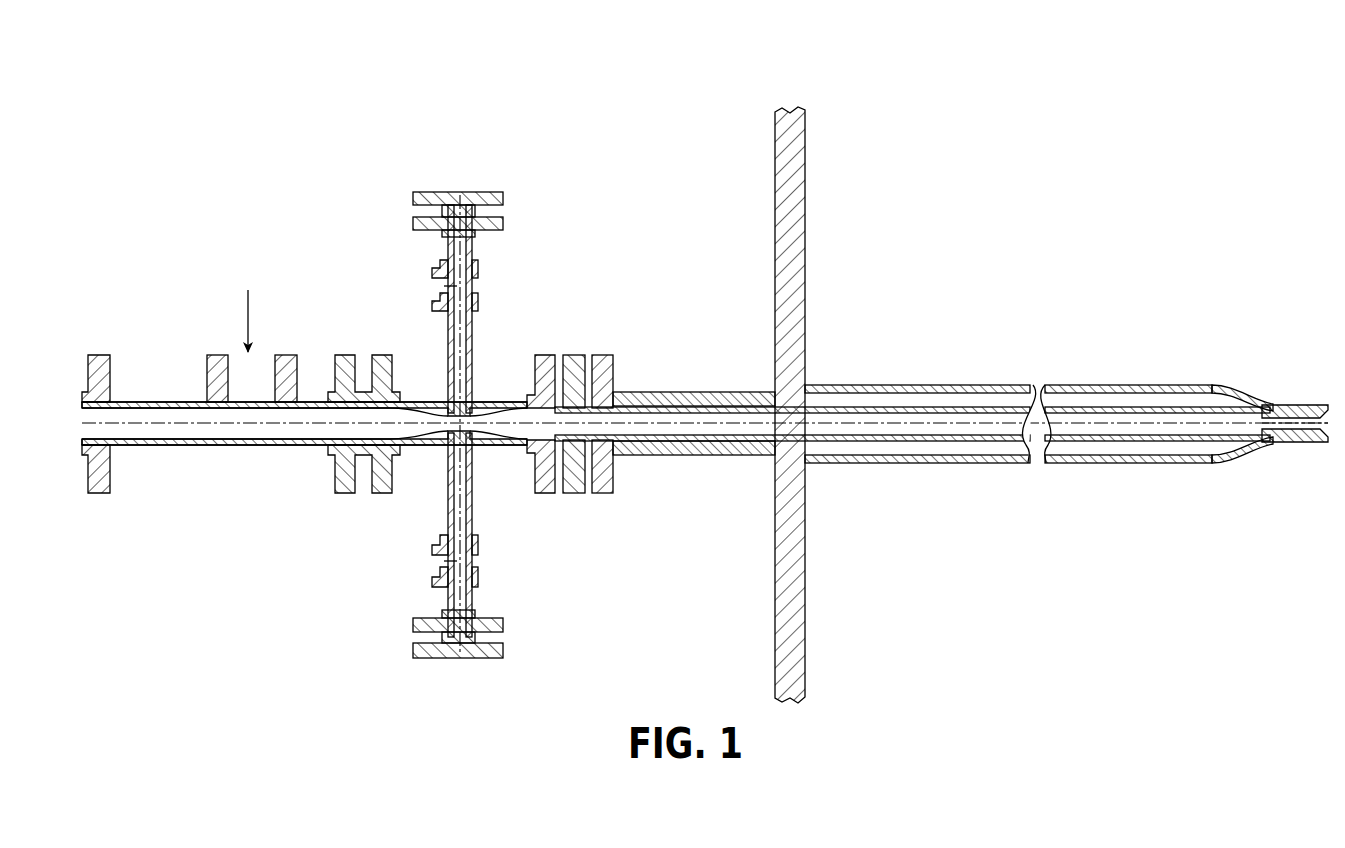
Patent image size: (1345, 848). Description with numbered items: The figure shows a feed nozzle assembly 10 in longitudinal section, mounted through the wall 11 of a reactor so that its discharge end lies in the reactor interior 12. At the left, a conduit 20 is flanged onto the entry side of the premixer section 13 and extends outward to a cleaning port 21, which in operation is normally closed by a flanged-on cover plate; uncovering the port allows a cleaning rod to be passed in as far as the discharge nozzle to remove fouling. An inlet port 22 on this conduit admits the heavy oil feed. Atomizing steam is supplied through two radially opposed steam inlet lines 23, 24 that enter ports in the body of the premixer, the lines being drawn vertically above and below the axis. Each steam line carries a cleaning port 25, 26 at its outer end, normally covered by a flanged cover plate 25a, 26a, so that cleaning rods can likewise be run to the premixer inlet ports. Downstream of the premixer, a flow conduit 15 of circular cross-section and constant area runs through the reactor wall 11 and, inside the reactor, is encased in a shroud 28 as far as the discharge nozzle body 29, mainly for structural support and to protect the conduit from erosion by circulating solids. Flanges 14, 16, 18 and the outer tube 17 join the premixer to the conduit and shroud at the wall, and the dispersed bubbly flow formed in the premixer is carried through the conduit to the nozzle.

The gas injection apparatus 10 is at (546, 125).
The wall 11 is at (778, 110).
The chamber 12 is at (953, 233).
The premixer section 13 is at (424, 470).
The flange 14 is at (543, 354).
The conduit 15 is at (975, 442).
The gasket 16 is at (573, 352).
The outer tube 17 is at (707, 390).
The flange 18 is at (600, 354).
The conduit 20 is at (240, 464).
The cleaning port 21 is at (80, 424).
The inlet port 22 is at (204, 364).
The steam inlet line 23 is at (440, 360).
The steam inlet line 24 is at (486, 497).
The cleaning port 25 is at (465, 254).
The flanged cover plate 25a is at (472, 190).
The cleaning port 26 is at (458, 590).
The flanged cover plate 26a is at (470, 660).
The shroud 28 is at (1134, 385).
The outlet tip 29 is at (1312, 447).